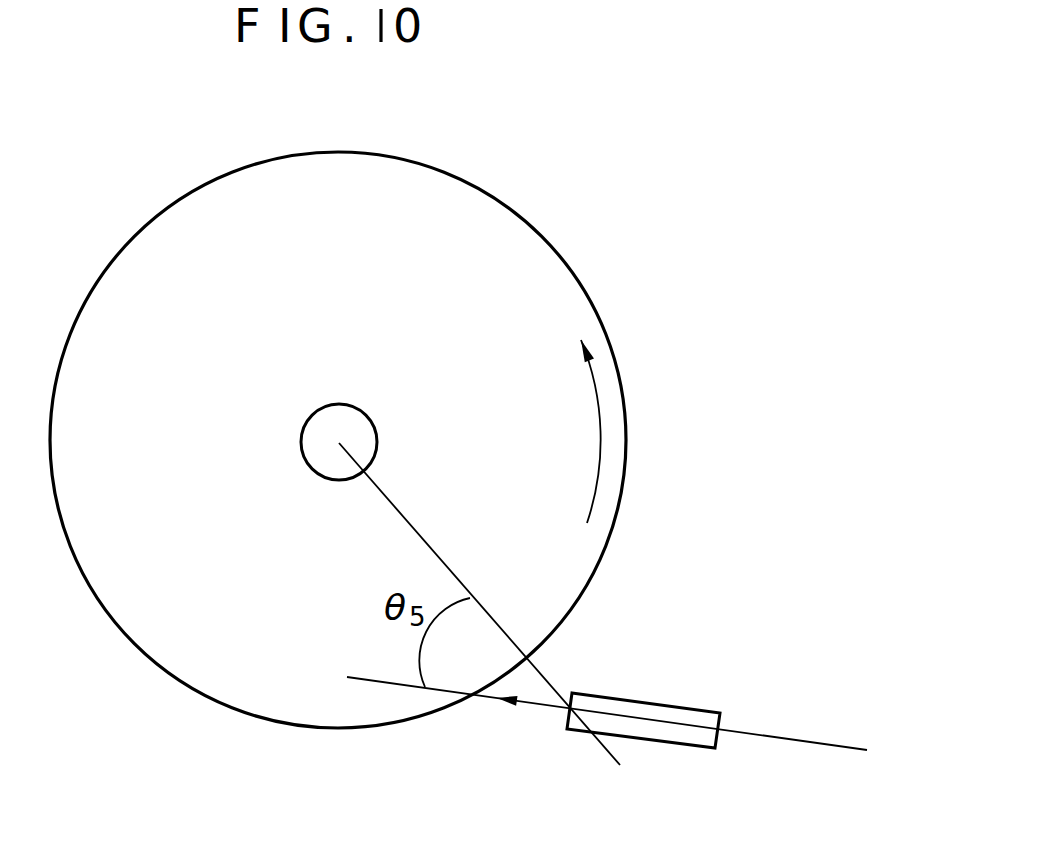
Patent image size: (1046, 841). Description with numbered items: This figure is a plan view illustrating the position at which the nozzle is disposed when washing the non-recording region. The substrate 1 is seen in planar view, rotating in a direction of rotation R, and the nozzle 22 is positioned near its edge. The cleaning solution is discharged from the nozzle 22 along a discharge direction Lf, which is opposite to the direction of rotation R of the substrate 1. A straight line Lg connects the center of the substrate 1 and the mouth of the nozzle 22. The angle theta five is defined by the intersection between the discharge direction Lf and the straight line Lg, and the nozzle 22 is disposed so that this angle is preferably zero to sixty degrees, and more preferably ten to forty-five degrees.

The substrate 1 is at (589, 296).
The nozzle 22 is at (646, 701).
The direction of rotation R is at (580, 431).
The discharge direction Lf is at (626, 732).
The straight line Lg is at (501, 627).